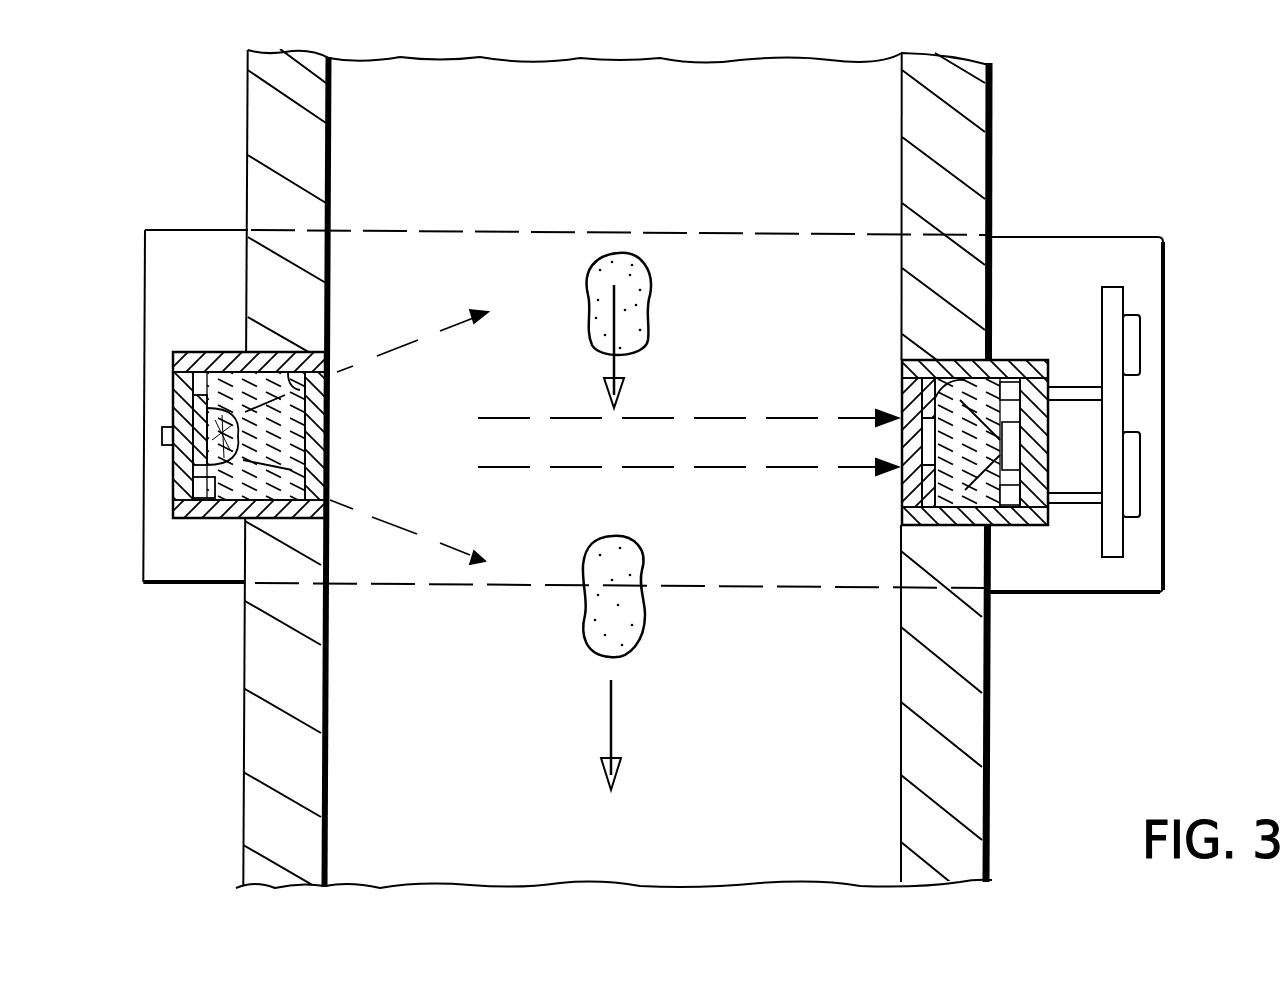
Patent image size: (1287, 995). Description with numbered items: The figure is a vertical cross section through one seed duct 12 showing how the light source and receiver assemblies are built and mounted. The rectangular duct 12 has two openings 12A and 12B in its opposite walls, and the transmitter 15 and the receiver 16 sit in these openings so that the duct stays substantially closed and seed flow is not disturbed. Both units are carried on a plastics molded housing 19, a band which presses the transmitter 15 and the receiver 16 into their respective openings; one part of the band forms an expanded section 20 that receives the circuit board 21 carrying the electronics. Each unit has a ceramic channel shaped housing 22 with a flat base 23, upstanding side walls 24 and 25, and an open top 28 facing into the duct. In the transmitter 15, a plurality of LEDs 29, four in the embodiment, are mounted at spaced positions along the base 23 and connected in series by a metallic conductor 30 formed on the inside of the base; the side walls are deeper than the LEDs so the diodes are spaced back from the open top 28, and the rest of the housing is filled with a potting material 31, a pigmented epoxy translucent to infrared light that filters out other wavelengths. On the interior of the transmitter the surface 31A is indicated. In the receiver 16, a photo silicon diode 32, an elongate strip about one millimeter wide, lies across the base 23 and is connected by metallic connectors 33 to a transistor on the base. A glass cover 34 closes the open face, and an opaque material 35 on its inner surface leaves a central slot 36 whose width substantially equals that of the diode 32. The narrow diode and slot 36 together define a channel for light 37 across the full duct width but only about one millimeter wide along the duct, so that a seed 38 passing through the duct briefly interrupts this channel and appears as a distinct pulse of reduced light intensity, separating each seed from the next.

The duct 12 is at (232, 679).
The opening 12A is at (300, 394).
The opening 12B is at (907, 497).
The transmitter 15 is at (219, 427).
The receiver 16 is at (1012, 340).
The plastics molded housing 19 is at (158, 212).
The expanded section 20 is at (1159, 396).
The circuit board 21 is at (1138, 412).
The channel shaped housing 22 is at (158, 478).
The flat base 23 is at (170, 392).
The upstanding side wall 24 is at (290, 352).
The upstanding side wall 25 is at (298, 519).
The open top 28 is at (340, 424).
The LEDs 29 is at (226, 412).
The metallic conductor 30 is at (215, 518).
The potting material 31 is at (292, 468).
The lens surface 31A is at (332, 452).
The photo silicon diode 32 is at (934, 447).
The metallic connectors 33 is at (997, 527).
The glass cover 34 is at (978, 383).
The opaque material 35 is at (945, 385).
The slot 36 is at (928, 445).
The channel for light 37 is at (578, 418).
The seed 38 is at (655, 290).